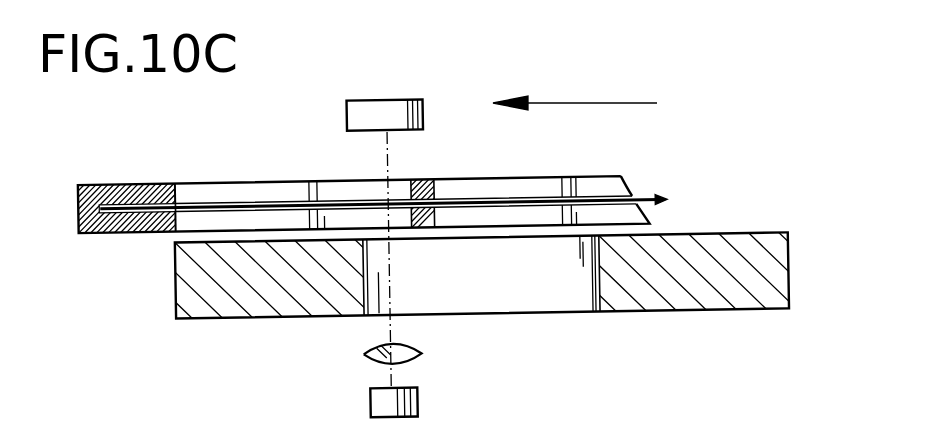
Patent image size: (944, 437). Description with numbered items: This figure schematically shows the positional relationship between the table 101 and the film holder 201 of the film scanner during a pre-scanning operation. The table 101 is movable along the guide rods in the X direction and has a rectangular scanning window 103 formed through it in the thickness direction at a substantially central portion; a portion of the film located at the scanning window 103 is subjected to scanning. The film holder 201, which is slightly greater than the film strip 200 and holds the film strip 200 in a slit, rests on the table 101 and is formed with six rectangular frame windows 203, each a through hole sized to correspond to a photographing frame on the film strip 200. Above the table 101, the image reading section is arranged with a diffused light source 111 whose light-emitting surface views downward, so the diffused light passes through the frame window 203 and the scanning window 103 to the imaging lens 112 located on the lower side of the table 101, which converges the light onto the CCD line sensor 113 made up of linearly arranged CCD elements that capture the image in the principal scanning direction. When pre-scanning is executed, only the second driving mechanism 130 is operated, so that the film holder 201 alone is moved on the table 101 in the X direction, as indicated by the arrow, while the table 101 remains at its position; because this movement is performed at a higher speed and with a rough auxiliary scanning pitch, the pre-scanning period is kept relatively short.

The film strip 200 is at (351, 179).
The film holder 201 is at (516, 150).
The frame window 203 is at (357, 198).
The table 101 is at (486, 298).
The scanning window 103 is at (495, 282).
The diffused light source 111 is at (396, 102).
The imaging lens 112 is at (363, 353).
The CCD line sensor 113 is at (415, 405).
The second driving mechanism 130 is at (612, 102).